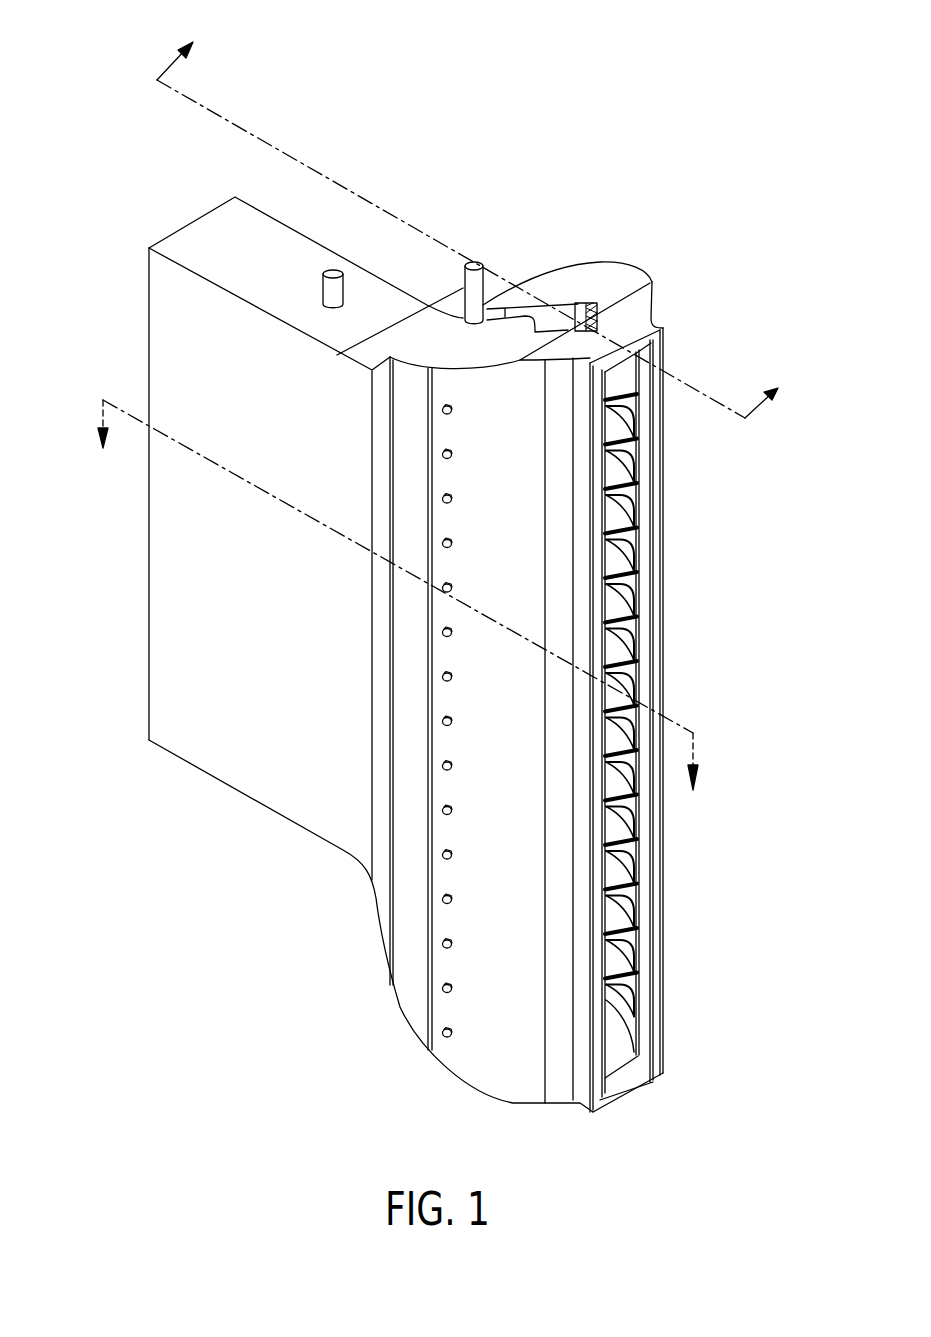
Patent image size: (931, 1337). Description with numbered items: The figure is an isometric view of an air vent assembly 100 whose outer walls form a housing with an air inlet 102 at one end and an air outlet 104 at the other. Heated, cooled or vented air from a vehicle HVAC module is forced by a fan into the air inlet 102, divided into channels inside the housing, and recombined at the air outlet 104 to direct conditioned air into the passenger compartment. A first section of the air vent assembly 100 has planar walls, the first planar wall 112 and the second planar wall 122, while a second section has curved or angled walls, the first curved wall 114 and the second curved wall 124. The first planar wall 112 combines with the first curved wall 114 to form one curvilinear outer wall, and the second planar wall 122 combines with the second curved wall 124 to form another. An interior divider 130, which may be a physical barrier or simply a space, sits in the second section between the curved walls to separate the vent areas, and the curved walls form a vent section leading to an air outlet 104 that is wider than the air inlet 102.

The air vent assembly 100 is at (690, 157).
The air inlet 102 is at (149, 372).
The air outlet 104 is at (612, 548).
The first planar wall 112 is at (278, 767).
The first curved wall 114 is at (415, 965).
The second planar wall 122 is at (235, 237).
The second curved wall 124 is at (548, 285).
The interior divider 130 is at (578, 308).